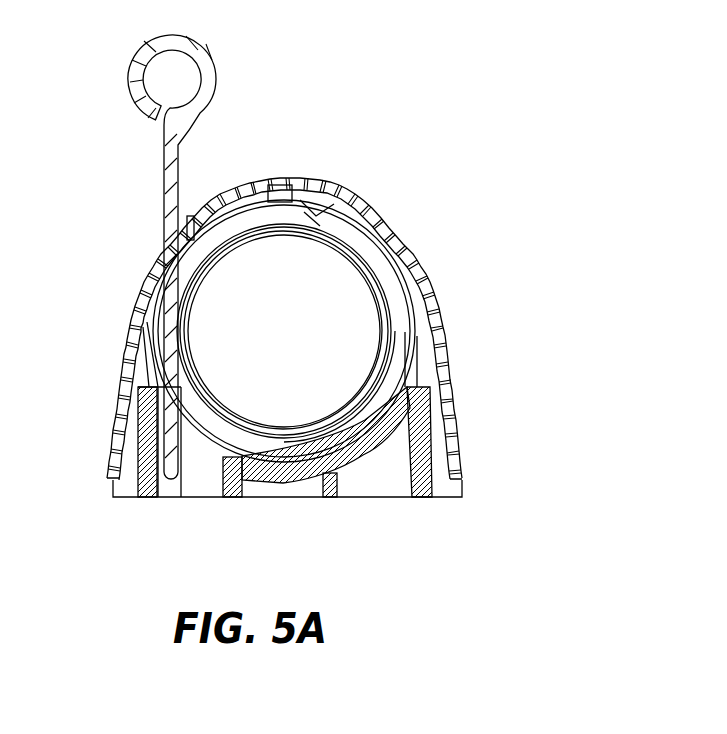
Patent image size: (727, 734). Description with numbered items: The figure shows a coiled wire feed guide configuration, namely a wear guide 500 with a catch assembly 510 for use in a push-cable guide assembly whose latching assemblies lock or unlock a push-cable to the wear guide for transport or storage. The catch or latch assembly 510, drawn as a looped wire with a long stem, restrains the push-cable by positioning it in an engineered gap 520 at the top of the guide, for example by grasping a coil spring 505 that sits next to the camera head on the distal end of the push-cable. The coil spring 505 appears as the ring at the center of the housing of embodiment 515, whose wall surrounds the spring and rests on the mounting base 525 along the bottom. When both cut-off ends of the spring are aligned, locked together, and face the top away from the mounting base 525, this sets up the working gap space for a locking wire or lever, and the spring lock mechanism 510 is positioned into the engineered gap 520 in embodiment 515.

The wear guide 500 is at (498, 92).
The coil spring 505 is at (330, 196).
The catch assembly 510 is at (128, 78).
The embodiment 515 is at (437, 290).
The engineered gap 520 is at (262, 183).
The mounting base 525 is at (297, 483).